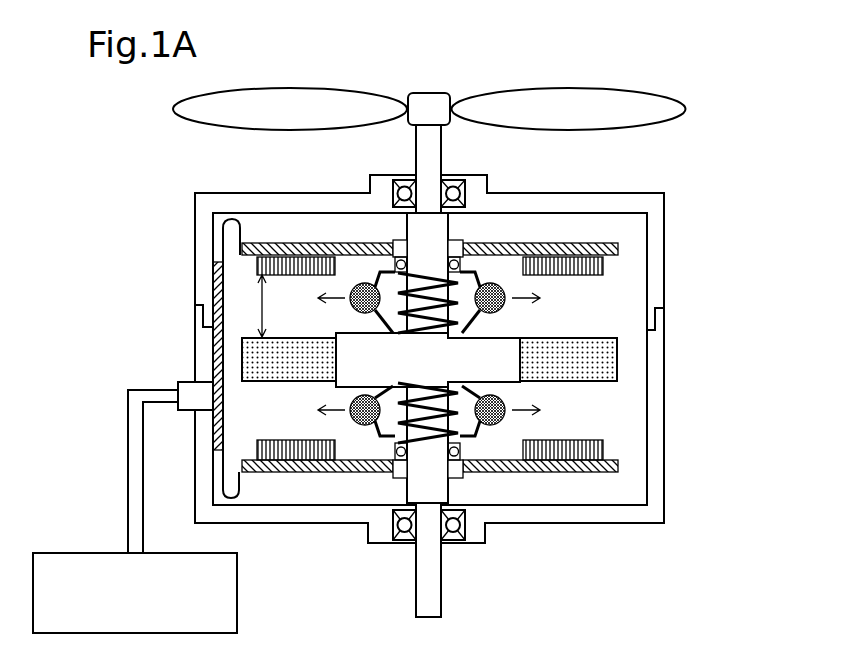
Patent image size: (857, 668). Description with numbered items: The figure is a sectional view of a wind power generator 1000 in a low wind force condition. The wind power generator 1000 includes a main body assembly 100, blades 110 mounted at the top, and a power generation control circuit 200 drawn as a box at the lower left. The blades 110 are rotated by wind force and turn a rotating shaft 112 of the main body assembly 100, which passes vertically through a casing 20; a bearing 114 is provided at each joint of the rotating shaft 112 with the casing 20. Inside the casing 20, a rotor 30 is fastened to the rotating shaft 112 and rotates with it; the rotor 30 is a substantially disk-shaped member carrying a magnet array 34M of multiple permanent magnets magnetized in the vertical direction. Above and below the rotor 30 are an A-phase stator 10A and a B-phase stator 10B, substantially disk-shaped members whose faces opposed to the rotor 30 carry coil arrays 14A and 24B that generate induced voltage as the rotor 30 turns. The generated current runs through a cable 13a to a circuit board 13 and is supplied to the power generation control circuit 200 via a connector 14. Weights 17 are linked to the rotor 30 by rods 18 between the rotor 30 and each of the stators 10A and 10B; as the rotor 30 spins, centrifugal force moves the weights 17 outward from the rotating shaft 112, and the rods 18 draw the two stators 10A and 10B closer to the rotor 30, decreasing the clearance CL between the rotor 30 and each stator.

The wind power generator 1000 is at (765, 140).
The main body assembly 100 is at (690, 190).
The blades 110 is at (660, 112).
The rotating shaft 112 is at (430, 602).
The bearing 114 is at (444, 181).
The casing 20 is at (579, 205).
The A-phase stator 10A is at (486, 289).
The B-phase stator 10B is at (486, 446).
The coil array 14A is at (585, 277).
The magnet array 34M is at (620, 472).
The rotor 30 is at (479, 374).
The coil array 24B is at (612, 381).
The weights 17 is at (507, 288).
The rods 18 is at (472, 278).
The circuit board 13 is at (184, 358).
The cable 13a is at (223, 238).
The connector 14 is at (186, 390).
The clearance CL is at (278, 306).
The power generation control circuit 200 is at (237, 594).